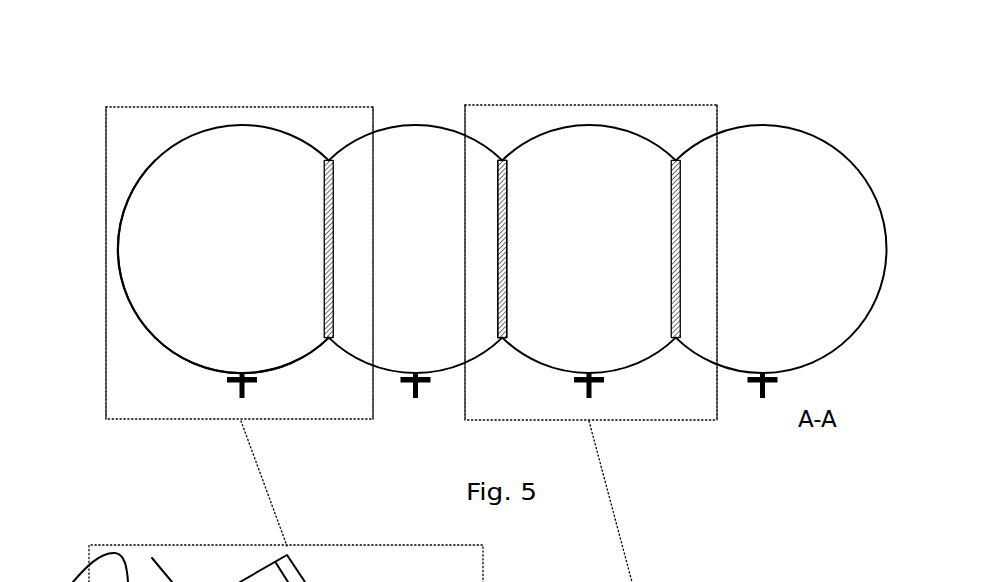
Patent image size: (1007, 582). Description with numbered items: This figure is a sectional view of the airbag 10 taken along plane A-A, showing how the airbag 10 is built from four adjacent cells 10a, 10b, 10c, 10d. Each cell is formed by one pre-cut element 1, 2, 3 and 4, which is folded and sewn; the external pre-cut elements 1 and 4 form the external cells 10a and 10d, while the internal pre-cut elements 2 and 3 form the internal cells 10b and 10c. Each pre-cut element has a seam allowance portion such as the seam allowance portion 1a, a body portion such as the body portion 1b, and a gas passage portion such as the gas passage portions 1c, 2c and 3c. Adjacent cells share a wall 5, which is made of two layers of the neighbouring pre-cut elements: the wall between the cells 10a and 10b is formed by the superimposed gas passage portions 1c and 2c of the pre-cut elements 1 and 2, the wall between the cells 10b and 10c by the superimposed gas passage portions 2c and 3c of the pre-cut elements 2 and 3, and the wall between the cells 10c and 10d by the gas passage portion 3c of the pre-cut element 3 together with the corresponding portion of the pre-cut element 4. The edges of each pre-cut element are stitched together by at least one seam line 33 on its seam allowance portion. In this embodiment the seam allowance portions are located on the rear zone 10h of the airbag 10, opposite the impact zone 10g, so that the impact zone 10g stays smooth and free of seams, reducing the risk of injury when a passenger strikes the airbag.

The airbag 10 is at (200, 90).
The cell 10a is at (162, 128).
The cell 10b is at (396, 112).
The cell 10c is at (636, 122).
The cell 10d is at (862, 351).
The impact zone 10g is at (591, 104).
The rear zone 10h is at (627, 408).
The pre-cut element 1 is at (158, 352).
The pre-cut element 2 is at (440, 116).
The pre-cut element 3 is at (666, 382).
The pre-cut element 4 is at (840, 132).
The wall 5 is at (514, 212).
The seam allowance portion 1a is at (373, 432).
The body portion 1b is at (120, 256).
The gas passage portion 1c is at (326, 213).
The gas passage portion 2c is at (331, 190).
The gas passage portion 3c is at (677, 217).
The seam line 33 is at (767, 378).